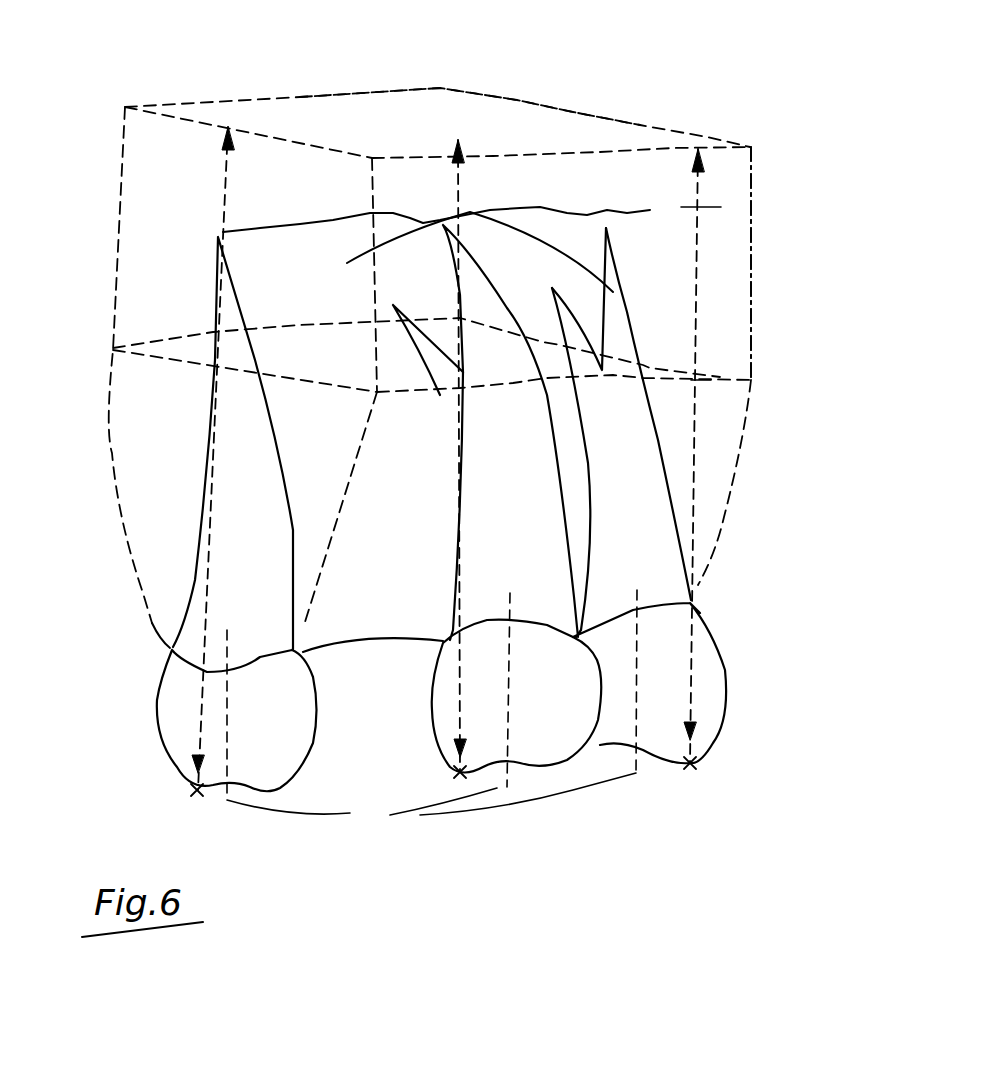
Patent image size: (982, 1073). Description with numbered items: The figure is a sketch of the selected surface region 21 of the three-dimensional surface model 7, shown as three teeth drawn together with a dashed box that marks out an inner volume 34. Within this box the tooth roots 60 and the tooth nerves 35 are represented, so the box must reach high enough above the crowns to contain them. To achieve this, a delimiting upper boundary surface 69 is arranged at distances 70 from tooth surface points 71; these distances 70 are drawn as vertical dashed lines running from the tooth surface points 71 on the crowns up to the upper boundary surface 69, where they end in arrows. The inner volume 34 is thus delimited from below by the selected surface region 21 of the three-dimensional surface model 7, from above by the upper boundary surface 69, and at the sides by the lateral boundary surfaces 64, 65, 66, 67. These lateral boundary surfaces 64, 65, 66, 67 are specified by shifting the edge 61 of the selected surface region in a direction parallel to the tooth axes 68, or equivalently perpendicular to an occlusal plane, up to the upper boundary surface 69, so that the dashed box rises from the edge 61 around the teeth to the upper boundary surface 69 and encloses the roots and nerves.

The 3D surface model 7 is at (694, 547).
The selected surface region 21 is at (739, 437).
The inner volume 34 is at (734, 297).
The tooth nerves 35 is at (537, 206).
The tooth roots 60 is at (232, 323).
The edge 61 is at (300, 377).
The lateral boundary surface 64 is at (164, 172).
The lateral boundary surface 65 is at (731, 186).
The lateral boundary surface 66 is at (634, 138).
The lateral boundary surface 67 is at (350, 122).
The tooth axes 68 is at (432, 722).
The upper boundary surface 69 is at (590, 117).
The distances 70 is at (698, 330).
The tooth surface points 71 is at (193, 790).